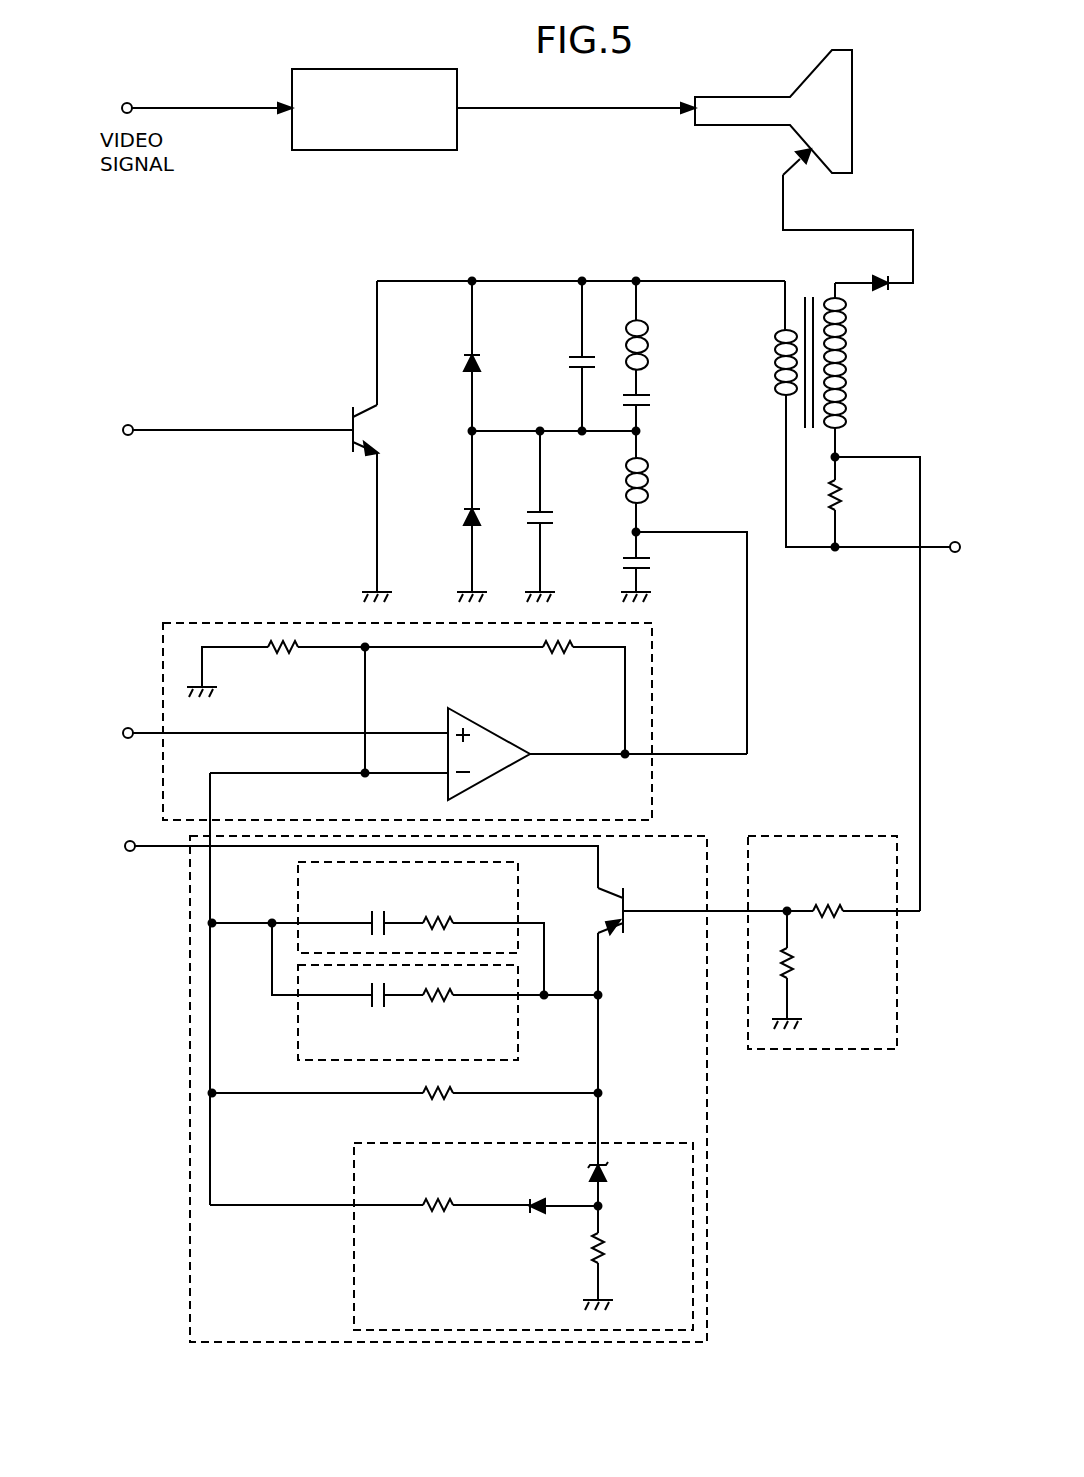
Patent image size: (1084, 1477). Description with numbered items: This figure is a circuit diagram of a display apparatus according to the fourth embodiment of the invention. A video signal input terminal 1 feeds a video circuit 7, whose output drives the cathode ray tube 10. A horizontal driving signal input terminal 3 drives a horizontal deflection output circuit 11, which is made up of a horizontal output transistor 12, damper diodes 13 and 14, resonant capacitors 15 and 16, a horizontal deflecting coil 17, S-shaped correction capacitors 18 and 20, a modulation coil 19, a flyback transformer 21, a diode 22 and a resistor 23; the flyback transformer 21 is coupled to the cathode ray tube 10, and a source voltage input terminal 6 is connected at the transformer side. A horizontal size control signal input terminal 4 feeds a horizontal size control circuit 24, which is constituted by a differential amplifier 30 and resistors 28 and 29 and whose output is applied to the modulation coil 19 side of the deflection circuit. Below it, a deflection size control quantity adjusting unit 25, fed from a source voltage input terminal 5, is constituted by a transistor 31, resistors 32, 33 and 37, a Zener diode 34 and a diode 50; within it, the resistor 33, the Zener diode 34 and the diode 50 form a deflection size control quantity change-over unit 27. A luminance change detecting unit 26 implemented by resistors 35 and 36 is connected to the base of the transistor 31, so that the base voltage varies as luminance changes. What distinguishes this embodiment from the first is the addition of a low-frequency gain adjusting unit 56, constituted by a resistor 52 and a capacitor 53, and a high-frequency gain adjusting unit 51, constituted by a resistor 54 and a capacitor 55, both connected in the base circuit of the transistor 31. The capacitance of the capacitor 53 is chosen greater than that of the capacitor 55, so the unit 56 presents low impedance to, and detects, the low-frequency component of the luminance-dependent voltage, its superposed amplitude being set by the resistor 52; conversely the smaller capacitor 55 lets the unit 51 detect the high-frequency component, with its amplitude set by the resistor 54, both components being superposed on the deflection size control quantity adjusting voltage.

The video signal input terminal 1 is at (127, 102).
The horizontal driving signal input terminal 3 is at (128, 436).
The horizontal size control signal input terminal 4 is at (128, 739).
The source voltage input terminal 5 is at (130, 852).
The source voltage input terminal 6 is at (955, 553).
The video circuit 7 is at (374, 67).
The cathode ray tube 10 is at (855, 108).
The horizontal deflection output circuit 11 is at (280, 299).
The horizontal output transistor 12 is at (363, 458).
The damper diode 13 is at (462, 360).
The damper diode 14 is at (460, 515).
The resonant capacitor 15 is at (560, 360).
The resonant capacitor 16 is at (572, 517).
The horizontal deflecting coil 17 is at (655, 340).
The S-shaped correction capacitor 18 is at (653, 402).
The modulation coil 19 is at (655, 482).
The S-shaped correction capacitor 20 is at (660, 565).
The flyback transformer 21 is at (772, 375).
The diode 22 is at (884, 297).
The resistor 23 is at (845, 497).
The horizontal size control circuit 24 is at (652, 790).
The deflection size control quantity adjusting unit 25 is at (708, 1280).
The luminance change detecting unit 26 is at (823, 1050).
The deflection size control quantity change-over unit 27 is at (352, 1270).
The resistor 28 is at (282, 650).
The resistor 29 is at (553, 655).
The differential amplifier 30 is at (490, 783).
The transistor 31 is at (612, 940).
The resistor 32 is at (432, 1108).
The resistor 33 is at (437, 1215).
The Zener diode 34 is at (612, 1172).
The resistor 35 is at (826, 905).
The resistor 36 is at (800, 963).
The resistor 37 is at (610, 1250).
The diode 50 is at (535, 1222).
The high-frequency gain adjusting unit 51 is at (296, 1027).
The resistor 52 is at (437, 915).
The capacitor 53 is at (372, 908).
The resistor 54 is at (437, 1003).
The capacitor 55 is at (378, 1010).
The low-frequency gain adjusting unit 56 is at (297, 888).